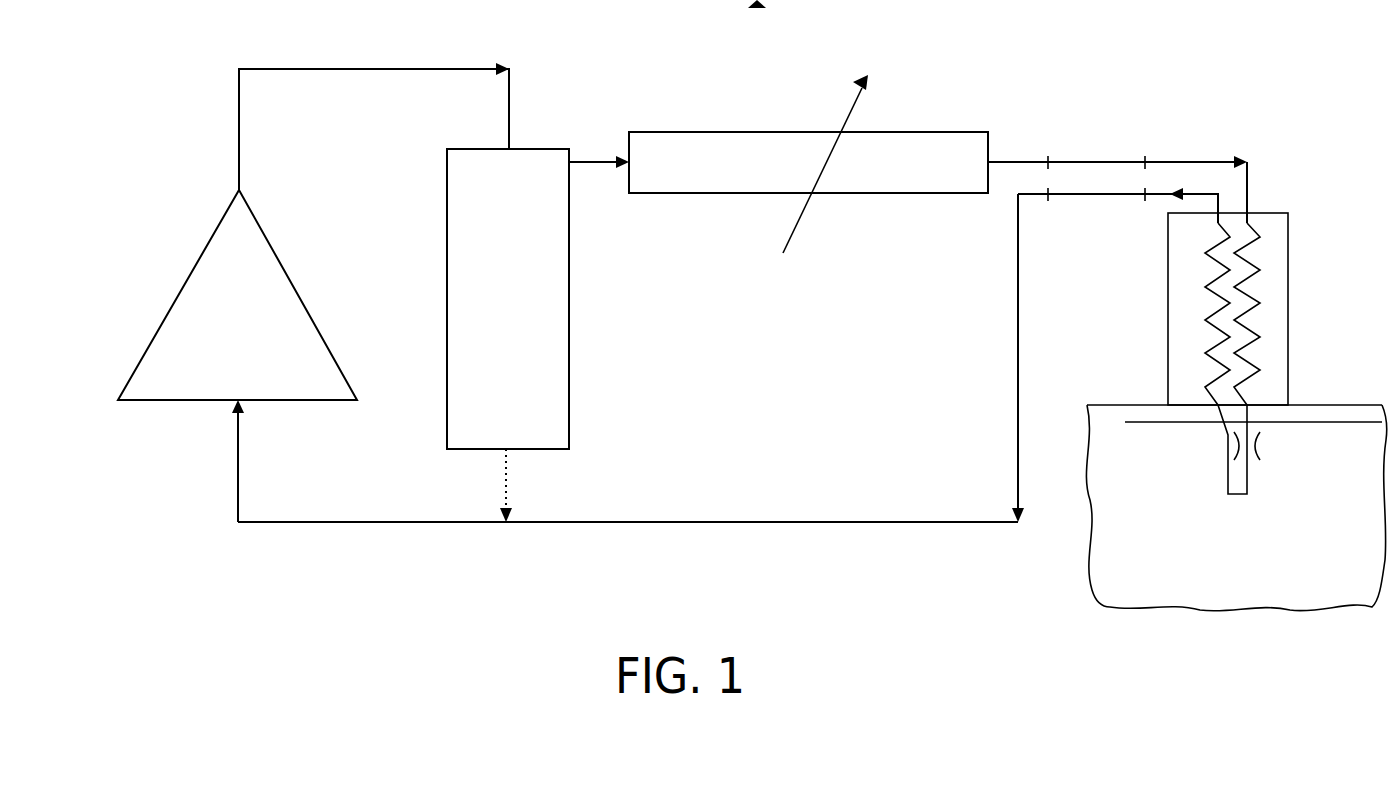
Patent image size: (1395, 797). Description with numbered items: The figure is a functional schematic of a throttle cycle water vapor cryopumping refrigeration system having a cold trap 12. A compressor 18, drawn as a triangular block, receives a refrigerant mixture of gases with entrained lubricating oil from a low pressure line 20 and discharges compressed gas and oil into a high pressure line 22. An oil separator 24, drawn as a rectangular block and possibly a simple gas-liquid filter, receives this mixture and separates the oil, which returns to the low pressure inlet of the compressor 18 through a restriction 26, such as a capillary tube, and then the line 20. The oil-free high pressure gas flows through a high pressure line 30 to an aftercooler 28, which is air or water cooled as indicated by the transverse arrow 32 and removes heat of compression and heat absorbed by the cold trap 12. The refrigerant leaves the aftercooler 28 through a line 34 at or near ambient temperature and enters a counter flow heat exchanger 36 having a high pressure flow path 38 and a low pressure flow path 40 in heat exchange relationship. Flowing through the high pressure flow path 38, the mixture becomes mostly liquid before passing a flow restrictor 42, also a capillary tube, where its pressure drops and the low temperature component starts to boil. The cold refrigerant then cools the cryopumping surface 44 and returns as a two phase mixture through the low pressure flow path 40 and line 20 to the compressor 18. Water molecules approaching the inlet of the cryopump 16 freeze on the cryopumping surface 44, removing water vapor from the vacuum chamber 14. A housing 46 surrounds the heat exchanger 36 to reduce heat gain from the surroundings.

The cold trap 12 is at (1346, 192).
The vacuum chamber 14 is at (1113, 413).
The cryopump 16 is at (1318, 488).
The compressor 18 is at (151, 402).
The low pressure line 20 is at (300, 521).
The high pressure line 22 is at (397, 70).
The oil separator 24 is at (569, 350).
The restriction 26 is at (506, 489).
The aftercooler 28 is at (680, 132).
The high pressure line 30 is at (587, 158).
The transverse arrow 32 is at (805, 205).
The line 34 is at (1000, 160).
The counter flow heat exchanger 36 is at (1248, 297).
The high pressure flow path 38 is at (1247, 368).
The low pressure flow path 40 is at (1222, 273).
The flow restrictor 42 is at (1258, 446).
The cryopumping surface 44 is at (1240, 495).
The housing 46 is at (1288, 219).